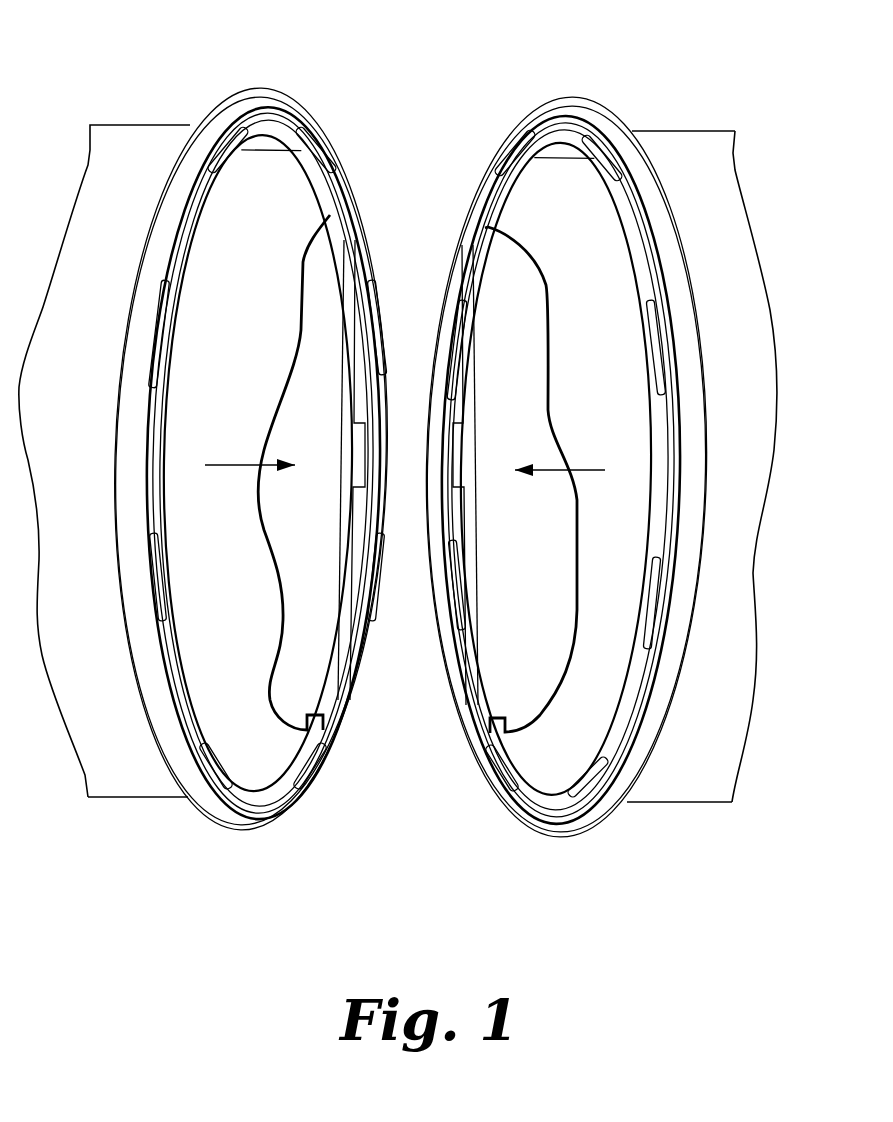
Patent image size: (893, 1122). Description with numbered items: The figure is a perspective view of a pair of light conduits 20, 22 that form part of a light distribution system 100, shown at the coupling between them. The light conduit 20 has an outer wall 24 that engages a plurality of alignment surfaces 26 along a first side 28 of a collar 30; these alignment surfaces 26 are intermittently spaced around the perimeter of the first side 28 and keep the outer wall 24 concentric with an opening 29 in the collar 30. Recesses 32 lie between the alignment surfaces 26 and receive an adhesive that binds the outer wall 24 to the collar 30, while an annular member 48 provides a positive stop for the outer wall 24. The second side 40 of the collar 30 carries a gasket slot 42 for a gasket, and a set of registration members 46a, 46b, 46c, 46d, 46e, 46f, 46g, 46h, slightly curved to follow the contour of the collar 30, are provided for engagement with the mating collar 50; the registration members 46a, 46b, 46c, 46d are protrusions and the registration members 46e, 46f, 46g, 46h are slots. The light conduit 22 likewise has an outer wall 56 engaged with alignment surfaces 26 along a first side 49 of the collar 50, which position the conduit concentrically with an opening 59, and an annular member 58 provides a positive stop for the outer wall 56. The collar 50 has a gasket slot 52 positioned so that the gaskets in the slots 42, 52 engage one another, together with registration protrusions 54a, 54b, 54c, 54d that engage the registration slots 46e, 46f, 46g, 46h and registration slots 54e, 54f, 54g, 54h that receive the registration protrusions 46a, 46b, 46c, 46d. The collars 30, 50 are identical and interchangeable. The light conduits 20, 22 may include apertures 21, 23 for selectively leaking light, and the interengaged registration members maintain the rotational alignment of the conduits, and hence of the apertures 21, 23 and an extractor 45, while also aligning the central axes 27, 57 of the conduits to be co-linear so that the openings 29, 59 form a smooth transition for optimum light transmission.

The light conduit 20 is at (104, 468).
The aperture 21 is at (112, 782).
The light conduit 22 is at (702, 464).
The aperture 23 is at (708, 788).
The outer wall 24 is at (160, 150).
The alignment surfaces 26 is at (357, 323).
The central axis 27 is at (237, 463).
The first side 28 is at (170, 773).
The opening 29 is at (196, 540).
The collar 30 is at (267, 443).
The recesses 32 is at (358, 443).
The second side 40 is at (267, 820).
The gasket slot 42 is at (278, 105).
The extractor 45 is at (268, 143).
The registration member 46a is at (325, 150).
The registration member 46b is at (380, 298).
The registration member 46c is at (330, 577).
The registration member 46d is at (307, 770).
The registration member 46e is at (233, 782).
The registration member 46f is at (165, 612).
The registration member 46g is at (165, 375).
The registration member 46h is at (223, 157).
The annular member 48 is at (337, 683).
The first side 49 is at (643, 777).
The collar 50 is at (608, 442).
The gasket slot 52 is at (554, 113).
The registration protrusion 54a is at (607, 182).
The registration protrusion 54b is at (663, 362).
The registration protrusion 54c is at (660, 612).
The registration protrusion 54d is at (587, 785).
The registration slot 54e is at (507, 783).
The registration slot 54f is at (449, 585).
The registration slot 54g is at (455, 363).
The registration slot 54h is at (517, 153).
The outer wall 56 is at (722, 130).
The central axis 57 is at (577, 467).
The annular member 58 is at (462, 662).
The opening 59 is at (611, 535).
The light distribution system 100 is at (475, 883).